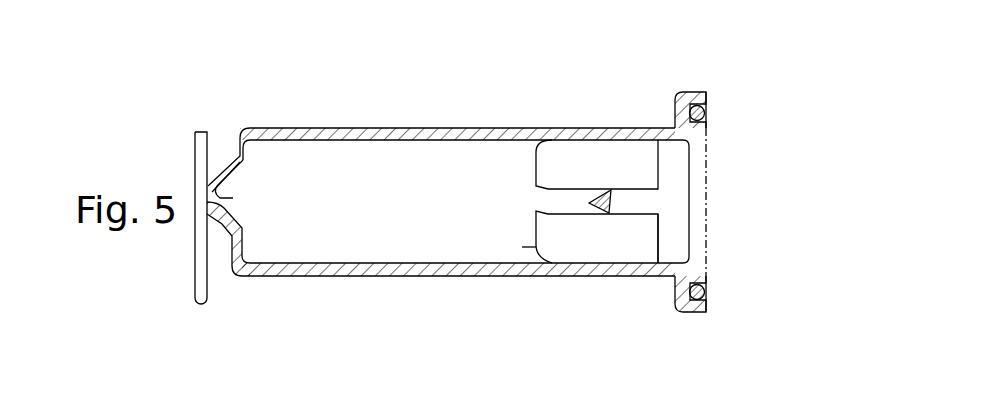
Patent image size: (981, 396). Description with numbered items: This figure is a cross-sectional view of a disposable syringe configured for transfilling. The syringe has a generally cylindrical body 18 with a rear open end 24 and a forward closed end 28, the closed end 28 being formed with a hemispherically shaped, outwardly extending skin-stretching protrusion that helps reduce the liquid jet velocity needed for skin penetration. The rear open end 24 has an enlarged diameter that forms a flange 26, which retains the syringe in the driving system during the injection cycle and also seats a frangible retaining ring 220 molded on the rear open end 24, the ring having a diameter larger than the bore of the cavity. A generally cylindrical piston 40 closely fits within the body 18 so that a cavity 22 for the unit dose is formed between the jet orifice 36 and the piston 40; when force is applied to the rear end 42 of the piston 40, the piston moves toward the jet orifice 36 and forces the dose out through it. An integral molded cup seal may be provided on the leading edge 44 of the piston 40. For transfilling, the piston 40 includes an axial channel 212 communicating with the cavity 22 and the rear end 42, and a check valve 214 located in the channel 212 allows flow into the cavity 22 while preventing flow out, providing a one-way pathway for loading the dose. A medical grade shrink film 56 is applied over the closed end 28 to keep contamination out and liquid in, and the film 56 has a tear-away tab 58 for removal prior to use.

The body 18 is at (511, 107).
The cavity 22 is at (378, 232).
The rear open end 24 is at (820, 133).
The flange 26 is at (700, 92).
The forward closed end 28 is at (225, 260).
The jet orifice 36 is at (232, 170).
The piston 40 is at (612, 245).
The rear end 42 is at (657, 237).
The leading edge 44 is at (523, 250).
The shrink film 56 is at (193, 133).
The tear-away tab 58 is at (200, 305).
The axial channel 212 is at (653, 198).
The check valve 214 is at (600, 194).
The frangible retaining ring 220 is at (707, 130).